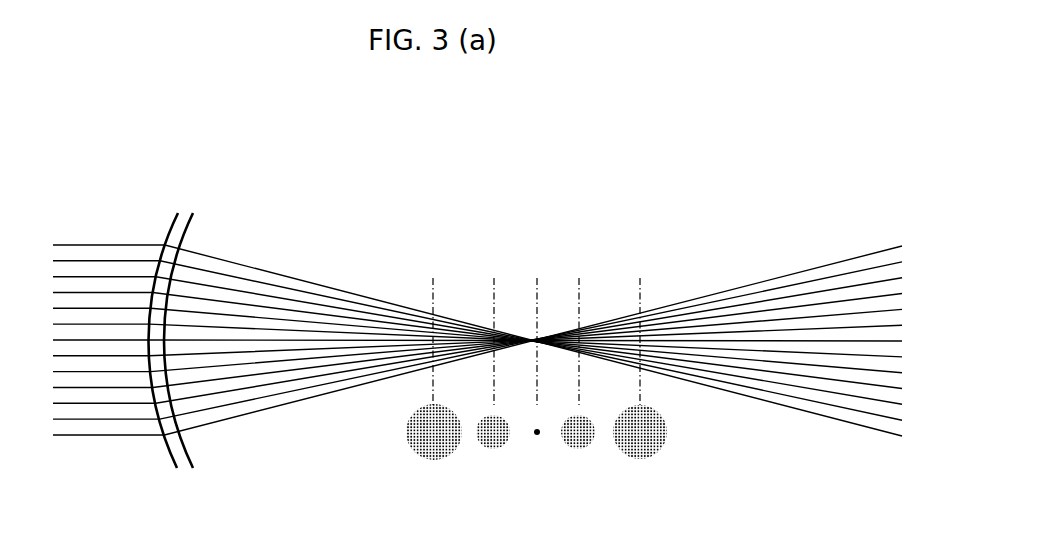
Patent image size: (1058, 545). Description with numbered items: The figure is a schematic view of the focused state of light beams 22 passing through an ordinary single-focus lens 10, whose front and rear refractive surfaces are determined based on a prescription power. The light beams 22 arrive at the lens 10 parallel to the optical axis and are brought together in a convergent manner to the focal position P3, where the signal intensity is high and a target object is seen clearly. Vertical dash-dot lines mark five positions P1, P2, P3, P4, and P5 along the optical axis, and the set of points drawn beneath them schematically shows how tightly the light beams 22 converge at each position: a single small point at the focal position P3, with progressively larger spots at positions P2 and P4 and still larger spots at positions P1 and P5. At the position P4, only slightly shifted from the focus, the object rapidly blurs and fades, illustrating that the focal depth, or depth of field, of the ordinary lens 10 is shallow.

The light beams 22 is at (81, 243).
The lens 10 is at (167, 225).
The position P1 is at (434, 356).
The position P2 is at (493, 351).
The focal position P3 is at (535, 344).
The position P4 is at (578, 351).
The position P5 is at (640, 356).